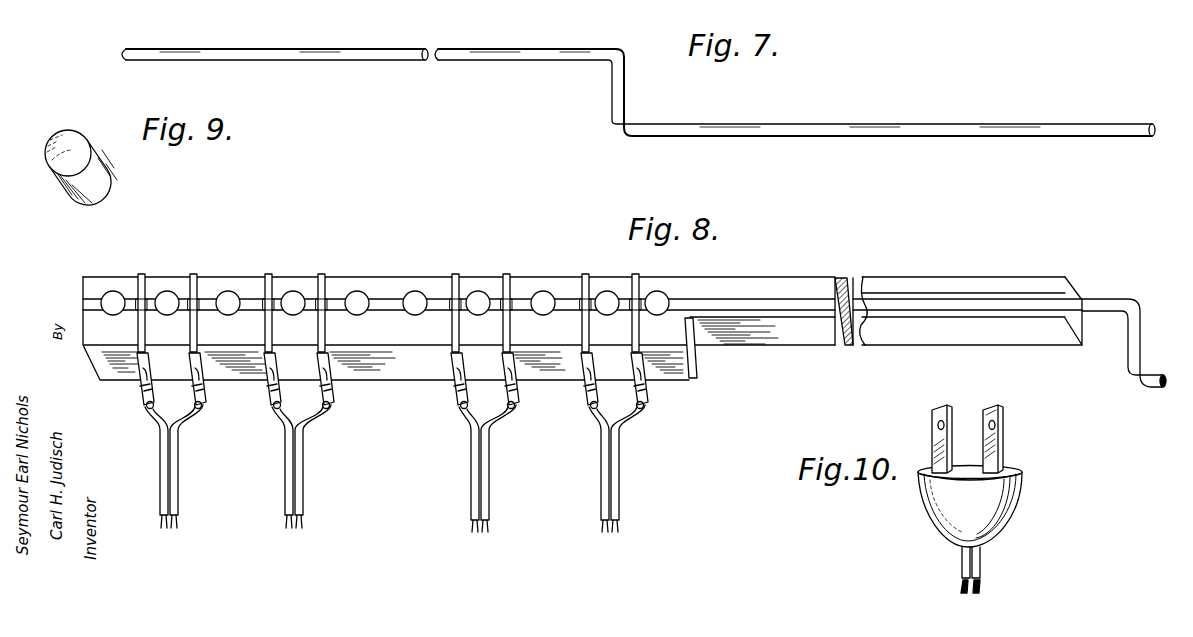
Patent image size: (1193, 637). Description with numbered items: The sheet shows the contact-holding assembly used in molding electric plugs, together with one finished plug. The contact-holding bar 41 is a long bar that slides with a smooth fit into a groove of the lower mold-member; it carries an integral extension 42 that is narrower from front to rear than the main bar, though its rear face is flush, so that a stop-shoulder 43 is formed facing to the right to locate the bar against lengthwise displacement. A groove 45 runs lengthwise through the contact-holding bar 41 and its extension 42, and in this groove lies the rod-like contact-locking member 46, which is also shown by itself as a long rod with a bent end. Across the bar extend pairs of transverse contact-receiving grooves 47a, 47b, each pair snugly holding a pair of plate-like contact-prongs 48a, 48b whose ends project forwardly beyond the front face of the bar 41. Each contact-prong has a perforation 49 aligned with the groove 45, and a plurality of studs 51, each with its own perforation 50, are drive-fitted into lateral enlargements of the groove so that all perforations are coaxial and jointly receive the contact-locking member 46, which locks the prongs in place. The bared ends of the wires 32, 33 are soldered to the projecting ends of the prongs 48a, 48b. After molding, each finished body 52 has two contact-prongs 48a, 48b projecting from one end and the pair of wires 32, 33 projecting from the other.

In FIG. 8, the wire 32 is at (160, 495).
In FIG. 10, the wire 32 is at (960, 566).
In FIG. 8, the wire 33 is at (179, 477).
In FIG. 10, the wire 33 is at (982, 567).
In FIG. 8, the contact-holding bar 41 is at (428, 277).
In FIG. 8, the integral extension 42 is at (848, 348).
In FIG. 8, the stop-shoulder 43 is at (698, 360).
In FIG. 8, the groove 45 is at (83, 302).
In FIG. 7, the contact-locking member 46 is at (425, 62).
In FIG. 8, the contact-locking member 46 is at (862, 278).
In FIG. 8, the contact-receiving groove 47a is at (141, 276).
In FIG. 8, the contact-receiving groove 47b is at (193, 276).
In FIG. 8, the contact-prong 48a is at (140, 390).
In FIG. 10, the contact-prong 48a is at (936, 406).
In FIG. 8, the contact-prong 48b is at (203, 392).
In FIG. 10, the contact-prong 48b is at (1003, 406).
In FIG. 8, the perforation 49 is at (146, 311).
In FIG. 10, the perforation 49 is at (938, 425).
In FIG. 9, the perforation 50 is at (98, 168).
In FIG. 8, the perforation 50 is at (236, 296).
In FIG. 9, the stud 51 is at (62, 130).
In FIG. 8, the stud 51 is at (112, 294).
In FIG. 10, the body 52 is at (1018, 512).